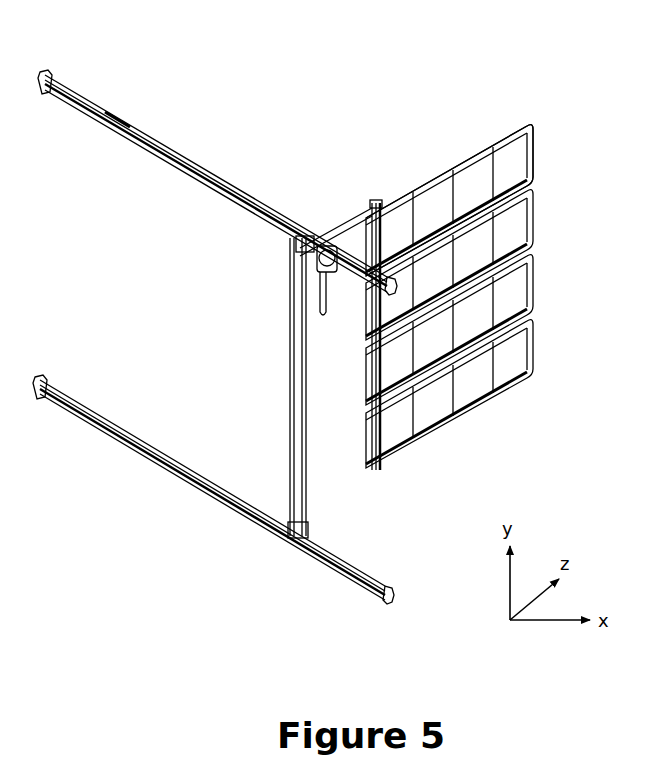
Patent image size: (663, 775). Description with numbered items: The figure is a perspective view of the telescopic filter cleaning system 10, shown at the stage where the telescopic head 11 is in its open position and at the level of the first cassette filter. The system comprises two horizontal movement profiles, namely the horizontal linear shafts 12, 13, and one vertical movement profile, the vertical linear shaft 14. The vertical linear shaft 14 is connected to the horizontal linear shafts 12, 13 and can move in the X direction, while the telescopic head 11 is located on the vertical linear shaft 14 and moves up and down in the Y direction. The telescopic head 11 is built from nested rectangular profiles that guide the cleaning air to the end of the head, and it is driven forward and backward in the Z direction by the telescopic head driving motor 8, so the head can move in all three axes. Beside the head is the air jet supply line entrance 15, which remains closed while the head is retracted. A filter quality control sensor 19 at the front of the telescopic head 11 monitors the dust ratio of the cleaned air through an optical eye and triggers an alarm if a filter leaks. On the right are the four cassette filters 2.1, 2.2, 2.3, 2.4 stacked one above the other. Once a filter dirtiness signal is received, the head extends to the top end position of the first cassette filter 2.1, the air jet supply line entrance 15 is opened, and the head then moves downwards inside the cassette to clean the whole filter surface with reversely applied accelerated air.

The filter cleaning system 10 is at (283, 84).
The telescopic head 11 is at (357, 214).
The horizontal linear shaft 12 is at (108, 113).
The horizontal linear shaft 13 is at (78, 405).
The vertical linear shaft 14 is at (289, 429).
The air jet supply line entrance 15 is at (318, 316).
The telescopic head driving motor 8 is at (334, 268).
The filter quality control sensor 19 is at (522, 143).
The 1st cassette filter 2.1 is at (520, 168).
The 2nd cassette filter 2.2 is at (517, 229).
The 3rd cassette filter 2.3 is at (517, 293).
The 4th cassette filter 2.4 is at (517, 356).